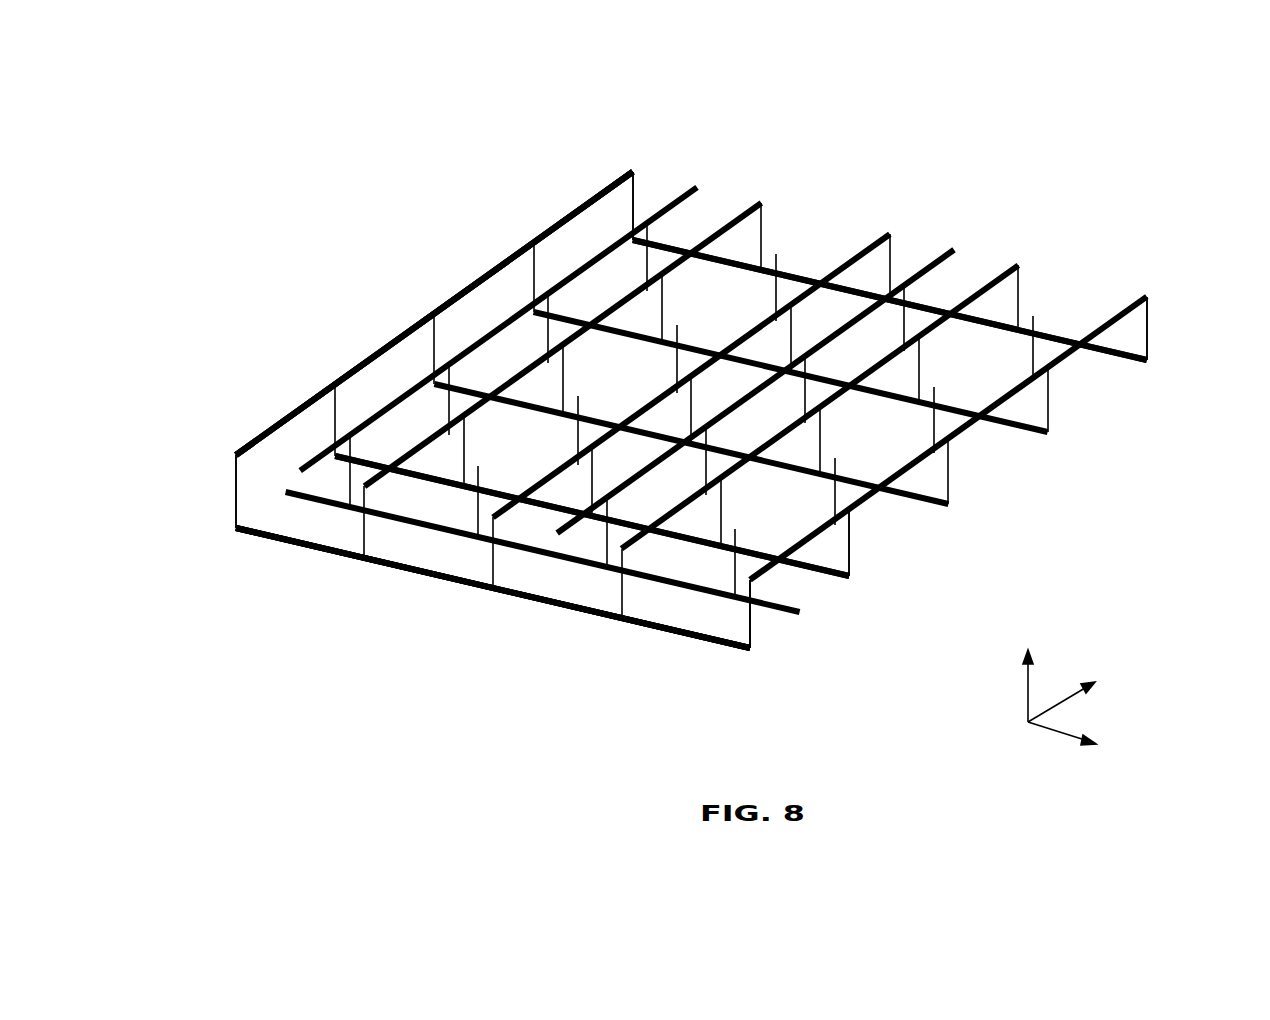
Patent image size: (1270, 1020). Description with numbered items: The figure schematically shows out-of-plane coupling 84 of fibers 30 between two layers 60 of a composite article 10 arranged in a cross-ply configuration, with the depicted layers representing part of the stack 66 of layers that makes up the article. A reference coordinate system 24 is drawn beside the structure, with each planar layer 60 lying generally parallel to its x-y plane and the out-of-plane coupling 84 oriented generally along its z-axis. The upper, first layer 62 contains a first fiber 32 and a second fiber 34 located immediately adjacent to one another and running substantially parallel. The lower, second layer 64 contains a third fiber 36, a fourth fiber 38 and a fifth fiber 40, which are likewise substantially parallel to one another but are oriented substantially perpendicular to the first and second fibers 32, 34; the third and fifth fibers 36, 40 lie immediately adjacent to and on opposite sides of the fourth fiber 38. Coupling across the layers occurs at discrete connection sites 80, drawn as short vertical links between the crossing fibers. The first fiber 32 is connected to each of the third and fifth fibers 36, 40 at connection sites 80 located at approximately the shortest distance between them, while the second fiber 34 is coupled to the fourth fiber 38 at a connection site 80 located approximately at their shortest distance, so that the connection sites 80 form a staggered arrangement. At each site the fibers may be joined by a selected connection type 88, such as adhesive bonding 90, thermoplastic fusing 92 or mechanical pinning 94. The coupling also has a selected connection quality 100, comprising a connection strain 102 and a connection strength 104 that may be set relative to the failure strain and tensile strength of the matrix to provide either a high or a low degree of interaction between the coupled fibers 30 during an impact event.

The composite article 10 is at (1120, 112).
The reference coordinate system 24 is at (1040, 760).
The fibers 30 is at (940, 300).
The first fiber 32 is at (272, 430).
The second fiber 34 is at (368, 427).
The third fiber 36 is at (265, 540).
The fourth fiber 38 is at (325, 504).
The fifth fiber 40 is at (410, 478).
The layer 60 is at (880, 520).
The first layer 62 is at (236, 457).
The second layer 64 is at (236, 528).
The stack 66 is at (752, 582).
The connection sites 80 is at (238, 455).
The out-of-plane coupling 84 is at (236, 492).
The connection type 88 is at (1150, 360).
The adhesive bonding 90 is at (1050, 434).
The thermoplastic fusing 92 is at (949, 506).
The mechanical pinning 94 is at (889, 234).
The connection quality 100 is at (537, 232).
The connection strain 102 is at (633, 172).
The connection strength 104 is at (761, 203).